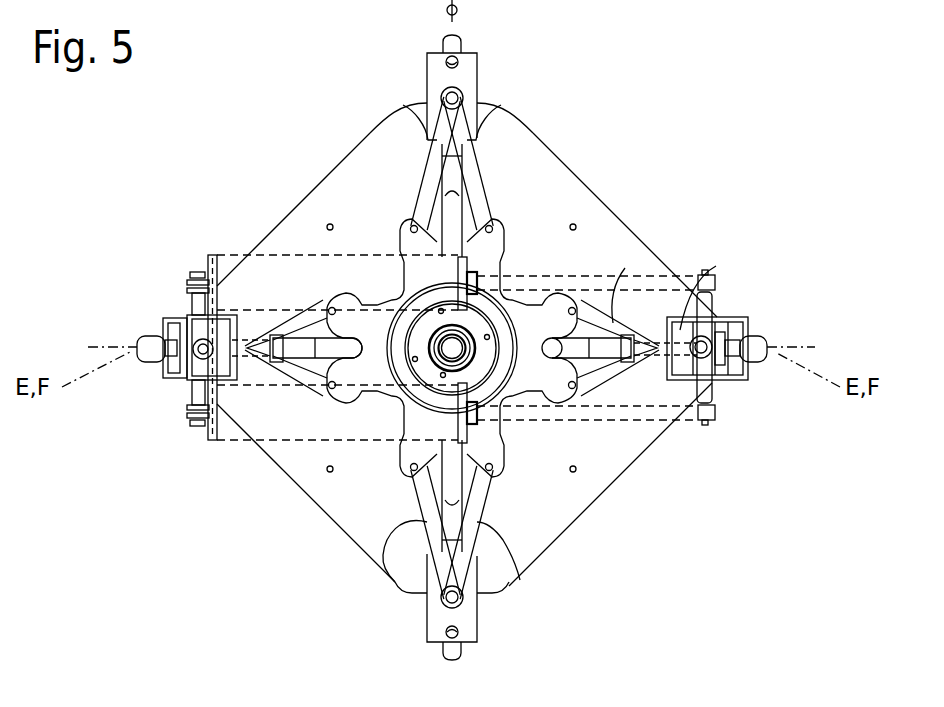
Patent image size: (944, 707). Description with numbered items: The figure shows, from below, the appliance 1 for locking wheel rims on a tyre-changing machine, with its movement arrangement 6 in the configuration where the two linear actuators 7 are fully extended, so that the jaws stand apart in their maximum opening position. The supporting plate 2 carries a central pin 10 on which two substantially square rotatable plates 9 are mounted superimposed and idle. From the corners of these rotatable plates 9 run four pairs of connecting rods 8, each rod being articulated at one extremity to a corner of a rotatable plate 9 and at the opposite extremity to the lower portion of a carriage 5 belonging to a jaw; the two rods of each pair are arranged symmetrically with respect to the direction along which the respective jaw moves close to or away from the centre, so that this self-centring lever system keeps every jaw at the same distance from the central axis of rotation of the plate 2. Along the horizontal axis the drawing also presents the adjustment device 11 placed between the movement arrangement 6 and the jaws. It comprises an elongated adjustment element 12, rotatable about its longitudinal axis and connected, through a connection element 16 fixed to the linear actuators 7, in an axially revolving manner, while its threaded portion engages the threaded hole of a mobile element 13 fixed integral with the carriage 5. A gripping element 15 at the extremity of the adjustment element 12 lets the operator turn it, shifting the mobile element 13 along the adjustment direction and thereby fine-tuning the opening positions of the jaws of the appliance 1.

The appliance for locking wheel rims 1 is at (737, 100).
The supporting structure 2 is at (538, 173).
The carriage 5 is at (465, 72).
The movement arrangement 6 is at (396, 216).
The linear actuator 7 is at (300, 267).
The connecting rod 8 is at (437, 140).
The rotatable plate 9 is at (492, 240).
The central pin 10 is at (478, 321).
The adjustment device 11 is at (134, 290).
The adjustment element 12 is at (215, 407).
The mobile element 13 is at (178, 367).
The gripping element 15 is at (155, 323).
The connection element 16 is at (183, 390).